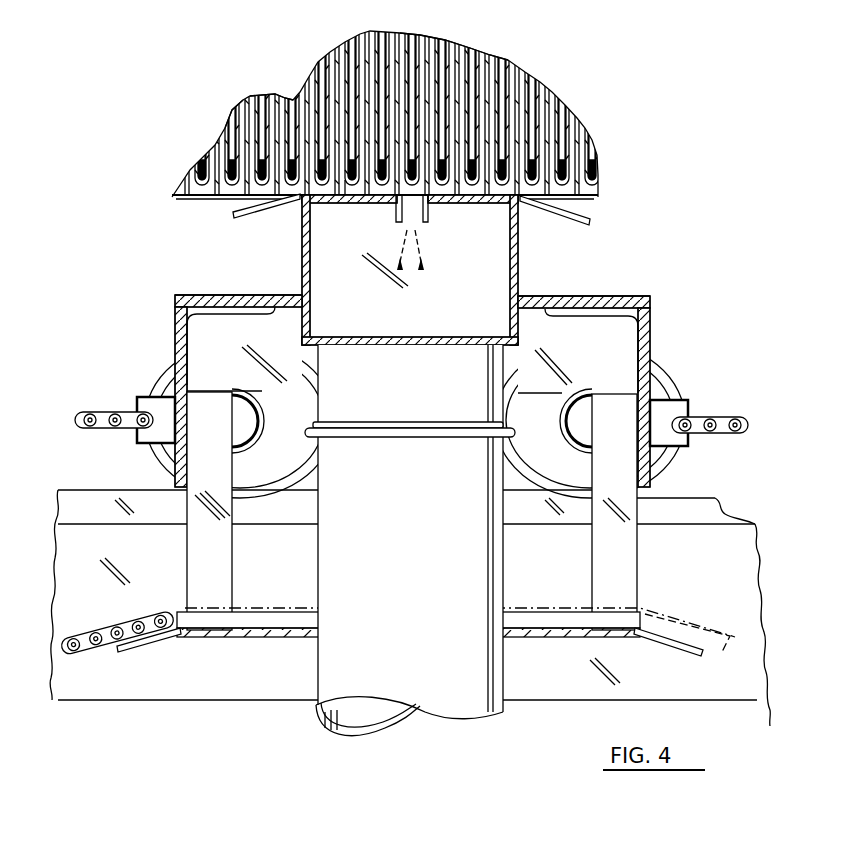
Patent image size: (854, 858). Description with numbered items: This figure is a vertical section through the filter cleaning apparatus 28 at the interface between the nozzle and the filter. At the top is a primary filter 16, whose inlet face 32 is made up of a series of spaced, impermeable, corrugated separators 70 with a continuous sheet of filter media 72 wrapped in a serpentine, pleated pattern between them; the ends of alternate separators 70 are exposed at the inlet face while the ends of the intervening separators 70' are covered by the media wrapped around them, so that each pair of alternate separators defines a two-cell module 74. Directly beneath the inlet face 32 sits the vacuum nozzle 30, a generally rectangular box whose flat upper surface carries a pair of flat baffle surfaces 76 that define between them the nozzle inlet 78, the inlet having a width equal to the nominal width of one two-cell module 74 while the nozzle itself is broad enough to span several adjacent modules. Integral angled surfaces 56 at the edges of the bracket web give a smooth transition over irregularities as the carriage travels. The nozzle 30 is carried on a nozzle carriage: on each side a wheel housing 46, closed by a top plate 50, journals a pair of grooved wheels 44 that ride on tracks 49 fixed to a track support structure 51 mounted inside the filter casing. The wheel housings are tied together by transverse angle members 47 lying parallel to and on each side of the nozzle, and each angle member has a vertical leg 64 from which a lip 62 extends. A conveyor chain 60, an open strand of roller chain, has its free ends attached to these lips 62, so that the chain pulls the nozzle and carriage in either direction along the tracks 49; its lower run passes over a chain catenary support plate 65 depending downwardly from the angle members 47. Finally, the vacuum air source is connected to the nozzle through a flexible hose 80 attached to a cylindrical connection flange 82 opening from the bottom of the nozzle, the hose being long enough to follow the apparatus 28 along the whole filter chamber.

The primary filter 16 is at (598, 148).
The filter cleaning apparatus 28 is at (640, 275).
The vacuum nozzle 30 is at (522, 280).
The inlet face 32 is at (600, 200).
The grooved wheel 44 is at (163, 368).
The wheel housing 46 is at (598, 361).
The transverse angle member 47 is at (178, 308).
The track 49 is at (686, 512).
The top plate 50 is at (211, 293).
The track support structure 51 is at (745, 544).
The angled surface 56 is at (262, 215).
The conveyor chain 60 is at (113, 428).
The lip 62 is at (140, 397).
The vertical leg 64 is at (183, 338).
The chain catenary support plate 65 is at (268, 633).
The separator 70 is at (364, 130).
The separator 70' is at (379, 54).
The filter media 72 is at (196, 196).
The two-cell module 74 is at (418, 222).
The baffle surface 76 is at (352, 194).
The nozzle inlet 78 is at (398, 218).
The flexible hose 80 is at (470, 712).
The cylindrical connection flange 82 is at (426, 391).